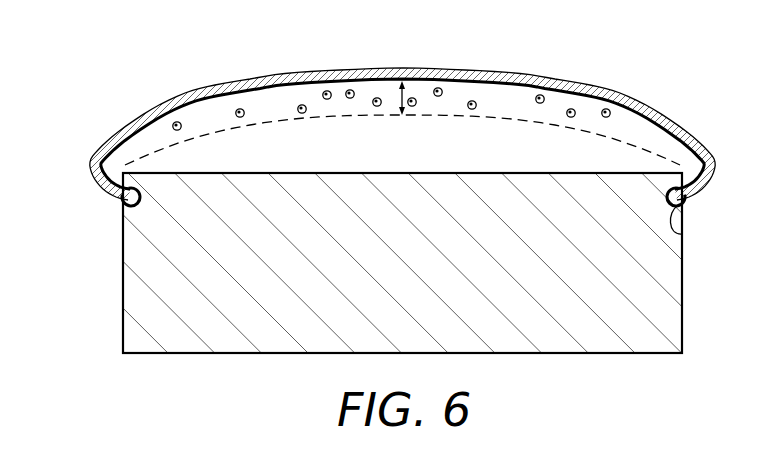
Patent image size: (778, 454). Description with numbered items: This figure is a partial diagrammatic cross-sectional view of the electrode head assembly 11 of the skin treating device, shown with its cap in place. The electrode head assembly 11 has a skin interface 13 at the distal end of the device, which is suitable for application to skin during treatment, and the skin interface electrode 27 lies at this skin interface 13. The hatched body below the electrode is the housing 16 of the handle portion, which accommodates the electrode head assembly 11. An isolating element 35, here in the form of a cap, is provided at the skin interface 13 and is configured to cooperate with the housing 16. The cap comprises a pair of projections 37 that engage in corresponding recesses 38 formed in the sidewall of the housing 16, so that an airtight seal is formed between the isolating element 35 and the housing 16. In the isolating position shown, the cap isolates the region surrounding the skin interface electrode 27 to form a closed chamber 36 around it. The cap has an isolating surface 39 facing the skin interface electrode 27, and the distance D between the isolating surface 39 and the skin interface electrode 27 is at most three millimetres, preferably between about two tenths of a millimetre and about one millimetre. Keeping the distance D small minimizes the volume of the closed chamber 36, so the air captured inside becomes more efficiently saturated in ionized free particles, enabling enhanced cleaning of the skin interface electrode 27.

The electrode head assembly 11 is at (84, 241).
The skin interface 13 is at (635, 120).
The housing 16 is at (123, 338).
The skin interface electrode 27 is at (452, 115).
The isolating element 35 is at (320, 68).
The closed chamber 36 is at (205, 113).
The projection 37 is at (688, 198).
The recess 38 is at (683, 236).
The isolating surface 39 is at (560, 88).
The distance D is at (400, 95).